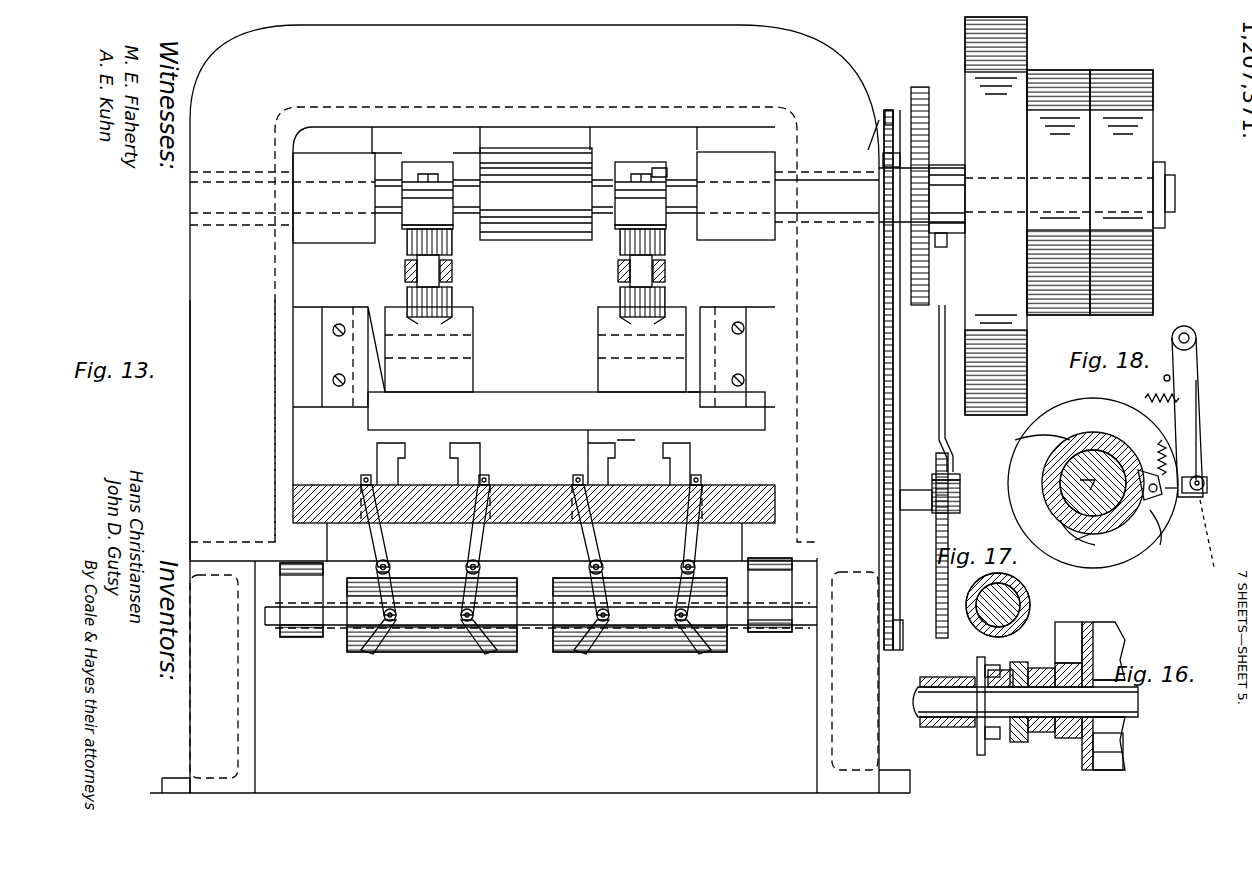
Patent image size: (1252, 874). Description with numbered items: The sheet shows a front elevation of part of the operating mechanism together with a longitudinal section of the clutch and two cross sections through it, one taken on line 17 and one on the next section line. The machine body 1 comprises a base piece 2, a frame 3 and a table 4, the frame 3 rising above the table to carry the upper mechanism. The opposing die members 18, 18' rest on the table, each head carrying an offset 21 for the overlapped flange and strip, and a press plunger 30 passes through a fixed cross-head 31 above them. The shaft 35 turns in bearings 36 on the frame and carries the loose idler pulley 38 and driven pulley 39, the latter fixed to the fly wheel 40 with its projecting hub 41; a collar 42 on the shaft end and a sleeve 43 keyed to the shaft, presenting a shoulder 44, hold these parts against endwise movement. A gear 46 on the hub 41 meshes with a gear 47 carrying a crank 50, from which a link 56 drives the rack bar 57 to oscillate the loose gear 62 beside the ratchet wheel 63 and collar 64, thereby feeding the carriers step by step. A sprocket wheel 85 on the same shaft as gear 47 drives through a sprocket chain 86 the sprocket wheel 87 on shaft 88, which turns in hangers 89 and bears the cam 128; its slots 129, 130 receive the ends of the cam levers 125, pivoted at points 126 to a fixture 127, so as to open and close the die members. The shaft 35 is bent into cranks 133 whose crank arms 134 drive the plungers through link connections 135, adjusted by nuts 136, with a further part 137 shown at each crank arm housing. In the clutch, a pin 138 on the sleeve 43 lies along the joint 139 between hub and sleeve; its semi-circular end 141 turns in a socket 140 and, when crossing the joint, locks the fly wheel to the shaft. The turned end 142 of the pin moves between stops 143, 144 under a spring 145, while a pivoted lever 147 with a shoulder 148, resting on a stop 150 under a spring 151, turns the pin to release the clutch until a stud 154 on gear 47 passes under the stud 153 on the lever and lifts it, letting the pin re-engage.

In FIG. 13, the body 1 is at (219, 421).
In FIG. 13, the base piece 2 is at (817, 710).
In FIG. 13, the frame 3 is at (190, 292).
In FIG. 13, the table 4 is at (534, 488).
In FIG. 16, the bushing 17 is at (1038, 665).
In FIG. 13, the die member 18 is at (590, 461).
In FIG. 16, the die member 18 is at (1009, 703).
In FIG. 13, the die member 18' is at (594, 446).
In FIG. 13, the offset 21 is at (255, 738).
In FIG. 13, the plunger 30 is at (466, 386).
In FIG. 13, the cross-head 31 is at (703, 434).
In FIG. 13, the shaft 35 is at (602, 185).
In FIG. 18, the shaft 35 is at (1060, 488).
In FIG. 16, the shaft 35 is at (1135, 732).
In FIG. 13, the bearings 36 is at (240, 172).
In FIG. 16, the bearings 36 is at (962, 728).
In FIG. 13, the idler pulley 38 is at (1117, 70).
In FIG. 13, the driven pulley 39 is at (1052, 70).
In FIG. 13, the fly wheel 40 is at (1020, 42).
In FIG. 16, the fly wheel 40 is at (1125, 768).
In FIG. 13, the hub 41 is at (1004, 165).
In FIG. 18, the hub 41 is at (1067, 500).
In FIG. 16, the hub 41 is at (1050, 668).
In FIG. 13, the collar 42 is at (1160, 228).
In FIG. 16, the sleeve 43 is at (981, 756).
In FIG. 16, the shoulder 44 is at (1070, 750).
In FIG. 13, the gear 46 is at (950, 183).
In FIG. 18, the gear 46 is at (1062, 410).
In FIG. 16, the gear 46 is at (1060, 740).
In FIG. 13, the gear 47 is at (930, 88).
In FIG. 18, the gear 47 is at (1185, 460).
In FIG. 13, the crank 50 is at (947, 235).
In FIG. 13, the link 56 is at (942, 320).
In FIG. 13, the rack bar 57 is at (936, 606).
In FIG. 13, the gear 62 is at (952, 480).
In FIG. 13, the ratchet wheel 63 is at (912, 490).
In FIG. 13, the collar 64 is at (960, 500).
In FIG. 13, the sprocket wheel 85 is at (893, 153).
In FIG. 13, the sprocket chain 86 is at (882, 404).
In FIG. 13, the sprocket wheel 87 is at (884, 648).
In FIG. 13, the shaft 88 is at (338, 630).
In FIG. 13, the hangers 89 is at (292, 640).
In FIG. 13, the cam levers 125 is at (392, 540).
In FIG. 13, the pivot points 126 is at (466, 569).
In FIG. 13, the fixture 127 is at (547, 560).
In FIG. 13, the cam 128 is at (438, 655).
In FIG. 13, the slot 129 is at (488, 656).
In FIG. 13, the slot 130 is at (372, 656).
In FIG. 13, the cranks 133 is at (658, 165).
In FIG. 13, the crank arms 134 is at (452, 246).
In FIG. 13, the link connections 135 is at (462, 319).
In FIG. 13, the adjusting nuts 136 is at (405, 271).
In FIG. 13, the screw housing 137 is at (438, 200).
In FIG. 16, the pin 138 is at (920, 727).
In FIG. 18, the joint 139 is at (1047, 453).
In FIG. 17, the joint 139 is at (1020, 600).
In FIG. 18, the socket 140 is at (1148, 468).
In FIG. 16, the socket 140 is at (1090, 660).
In FIG. 18, the pin end 141 is at (1115, 455).
In FIG. 16, the pin end 141 is at (1095, 670).
In FIG. 18, the turned end 142 is at (1060, 530).
In FIG. 16, the turned end 142 is at (985, 673).
In FIG. 18, the stop 143 is at (1200, 476).
In FIG. 18, the stop 144 is at (1088, 537).
In FIG. 18, the spring 145 is at (1200, 385).
In FIG. 13, the lever 147 is at (884, 108).
In FIG. 18, the lever 147 is at (1175, 350).
In FIG. 16, the lever 147 is at (990, 675).
In FIG. 18, the shoulder 148 is at (1152, 512).
In FIG. 18, the stop 150 is at (1164, 380).
In FIG. 18, the spring 151 is at (1145, 396).
In FIG. 18, the stud 153 is at (1203, 477).
In FIG. 18, the stud 154 is at (1205, 545).